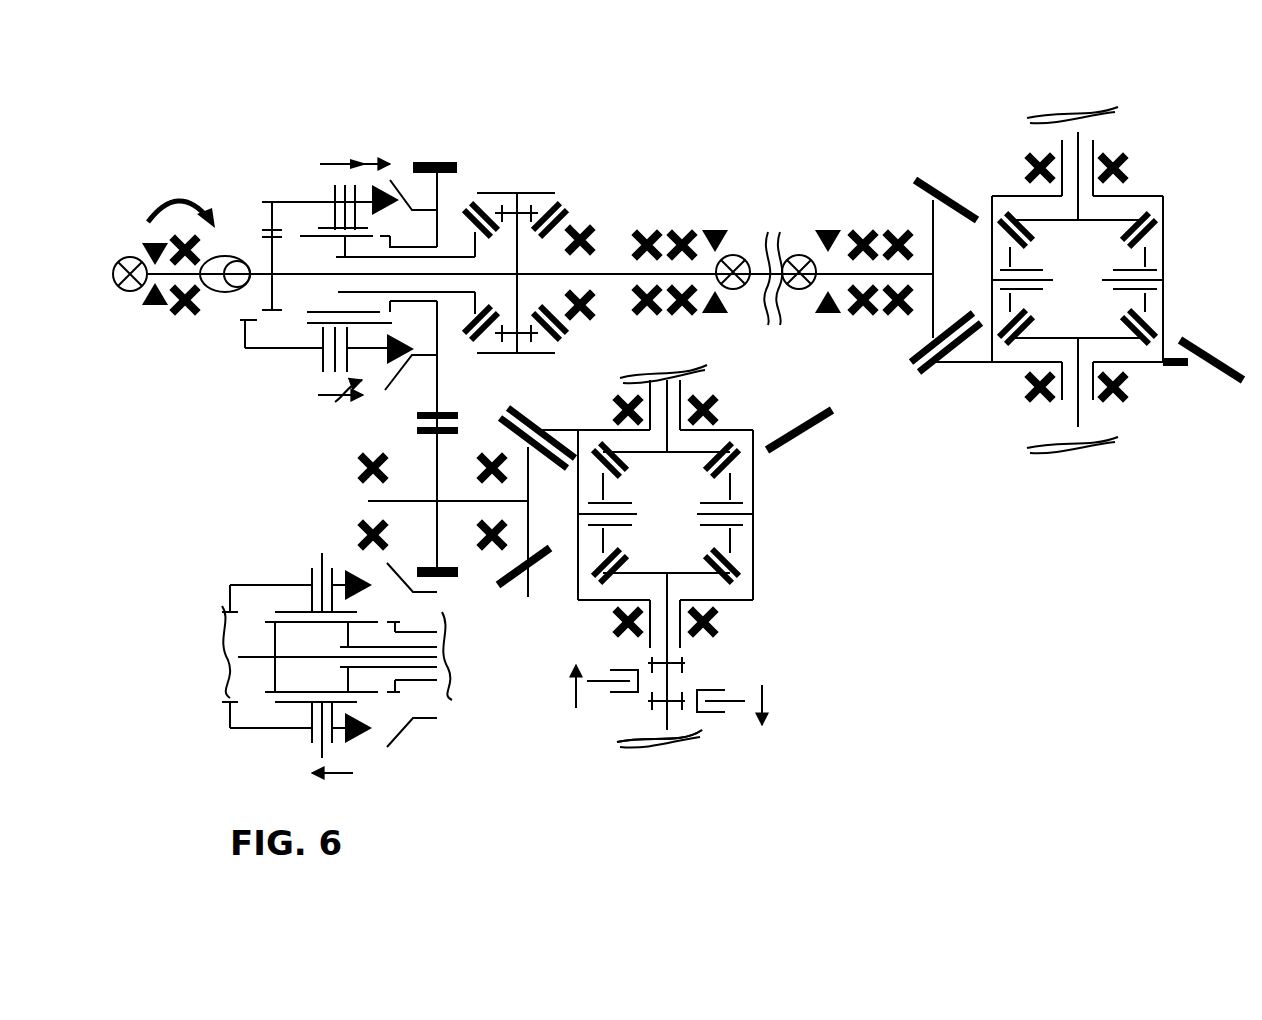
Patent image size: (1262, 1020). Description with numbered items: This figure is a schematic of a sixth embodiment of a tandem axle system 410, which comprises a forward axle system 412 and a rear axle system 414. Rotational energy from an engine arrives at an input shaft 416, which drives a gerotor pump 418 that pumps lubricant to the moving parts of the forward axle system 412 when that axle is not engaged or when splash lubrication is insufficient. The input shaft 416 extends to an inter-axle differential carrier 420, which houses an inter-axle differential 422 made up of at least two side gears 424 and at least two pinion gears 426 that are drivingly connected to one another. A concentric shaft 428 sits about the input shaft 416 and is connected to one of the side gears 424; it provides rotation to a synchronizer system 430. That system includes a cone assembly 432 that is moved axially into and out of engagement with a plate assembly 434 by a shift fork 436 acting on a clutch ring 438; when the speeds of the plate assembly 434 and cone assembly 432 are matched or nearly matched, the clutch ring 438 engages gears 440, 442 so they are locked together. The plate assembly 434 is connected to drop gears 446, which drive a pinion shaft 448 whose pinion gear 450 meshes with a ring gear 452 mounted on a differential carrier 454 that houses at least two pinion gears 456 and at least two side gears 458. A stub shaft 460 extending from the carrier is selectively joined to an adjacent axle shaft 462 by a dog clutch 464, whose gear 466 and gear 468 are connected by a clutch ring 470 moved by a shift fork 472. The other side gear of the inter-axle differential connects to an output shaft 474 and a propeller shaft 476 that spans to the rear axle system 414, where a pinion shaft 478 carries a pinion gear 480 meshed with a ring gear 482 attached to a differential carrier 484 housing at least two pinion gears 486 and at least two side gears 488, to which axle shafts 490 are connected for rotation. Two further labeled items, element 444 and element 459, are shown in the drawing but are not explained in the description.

The tandem axle system 410 is at (672, 165).
The forward axle system 412 is at (792, 500).
The rear axle system 414 is at (1088, 85).
The input shaft 416 is at (264, 270).
The gerotor pump 418 is at (233, 262).
The inter-axle differential carrier 420 is at (533, 193).
The inter-axle differential 422 is at (500, 188).
The side gears 424 is at (568, 214).
The pinion gears 426 is at (558, 204).
The concentric shaft 428 is at (346, 257).
The synchronizer system 430 is at (372, 142).
The cone assembly 432 is at (340, 546).
The plate assembly 434 is at (402, 170).
The shift fork 436 is at (340, 185).
The clutch ring 438 is at (328, 226).
The gear 440 is at (307, 234).
The gear 442 is at (400, 240).
The support 444 is at (278, 322).
The drop gears 446 is at (473, 418).
The pinion shaft 448 is at (460, 503).
The pinion gear 450 is at (527, 580).
The ring gear 452 is at (830, 420).
The differential carrier 454 is at (755, 472).
The pinion gears 456 is at (740, 562).
The side gears 458 is at (727, 445).
The shaft 459 is at (670, 390).
The stub shaft 460 is at (670, 642).
The adjacent shaft 462 is at (666, 730).
The clutch 464 is at (598, 702).
The gear 466 is at (686, 663).
The gear 468 is at (684, 706).
The clutch ring 470 is at (630, 695).
The shift fork 472 is at (748, 697).
The output shaft 474 is at (663, 270).
The propeller shaft 476 is at (766, 266).
The pinion shaft 478 is at (882, 270).
The pinion gear 480 is at (933, 182).
The ring gear 482 is at (1232, 370).
The differential carrier 484 is at (1165, 302).
The pinion gears 486 is at (1158, 234).
The side gears 488 is at (1140, 215).
The axle shafts 490 is at (1080, 134).